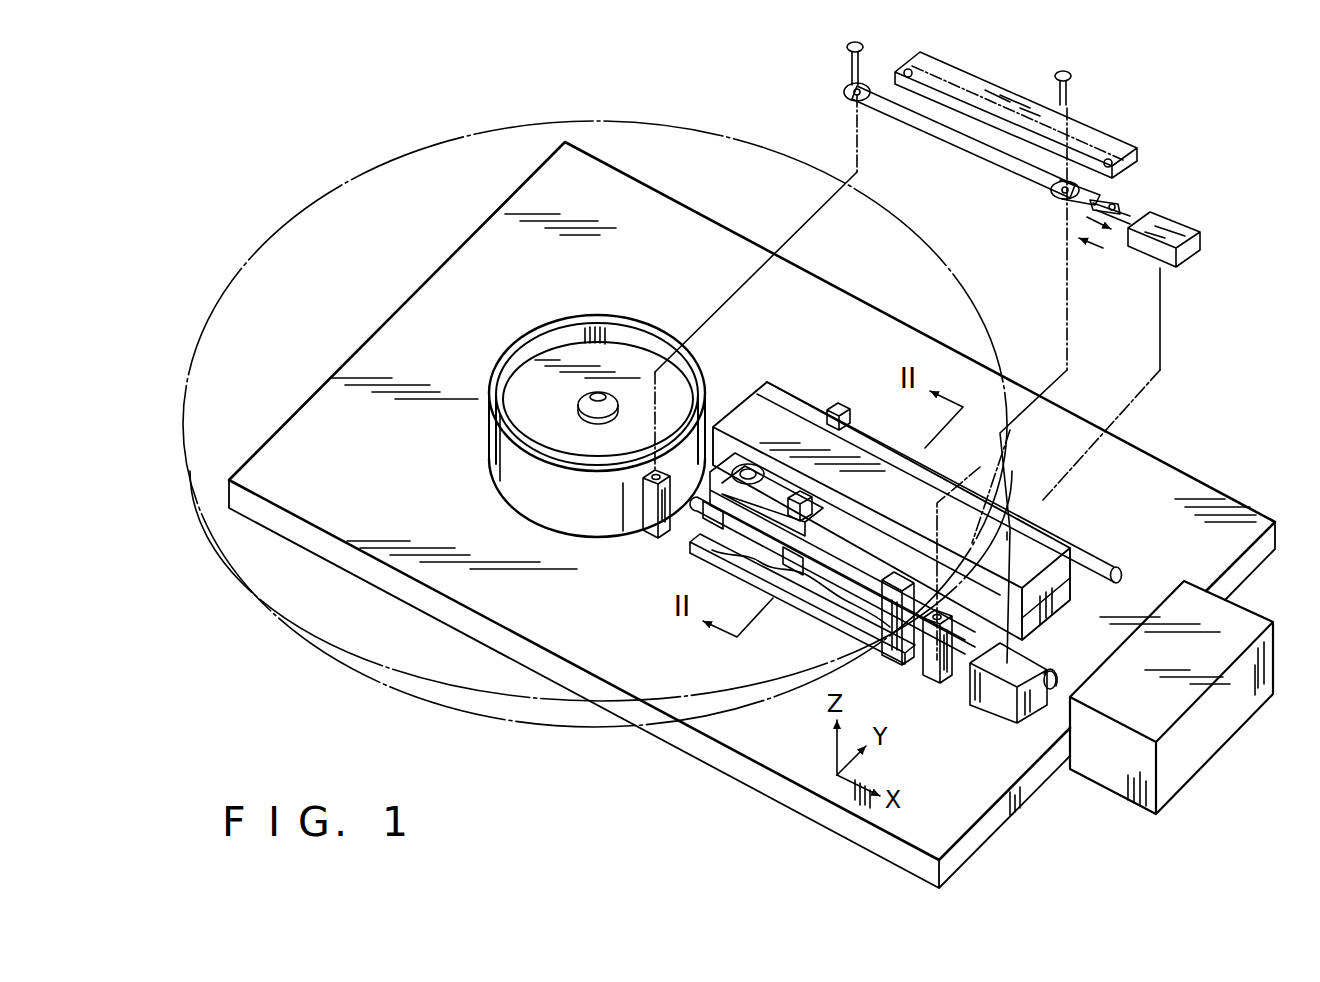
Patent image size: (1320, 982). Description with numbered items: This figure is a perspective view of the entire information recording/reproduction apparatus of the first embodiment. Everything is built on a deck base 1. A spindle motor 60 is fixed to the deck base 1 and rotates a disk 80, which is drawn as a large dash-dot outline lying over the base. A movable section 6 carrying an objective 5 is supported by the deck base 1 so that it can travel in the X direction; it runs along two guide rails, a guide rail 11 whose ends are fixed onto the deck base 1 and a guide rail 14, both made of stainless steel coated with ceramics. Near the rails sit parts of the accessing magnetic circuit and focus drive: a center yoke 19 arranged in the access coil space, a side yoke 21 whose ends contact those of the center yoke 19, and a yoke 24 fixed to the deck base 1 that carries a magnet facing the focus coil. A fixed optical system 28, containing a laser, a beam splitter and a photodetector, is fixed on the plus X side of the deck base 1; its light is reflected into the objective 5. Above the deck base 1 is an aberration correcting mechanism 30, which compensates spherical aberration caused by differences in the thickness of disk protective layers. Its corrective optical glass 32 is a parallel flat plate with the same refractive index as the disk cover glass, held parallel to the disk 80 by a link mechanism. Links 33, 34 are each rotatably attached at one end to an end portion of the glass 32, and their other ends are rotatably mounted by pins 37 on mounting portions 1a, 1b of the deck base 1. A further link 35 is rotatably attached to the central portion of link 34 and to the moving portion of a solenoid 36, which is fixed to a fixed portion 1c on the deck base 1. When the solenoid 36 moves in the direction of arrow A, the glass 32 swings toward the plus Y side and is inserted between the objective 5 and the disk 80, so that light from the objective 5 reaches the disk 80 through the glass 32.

The deck base 1 is at (1173, 460).
The mounting portion 1a is at (646, 482).
The mounting portion 1b is at (927, 660).
The fixed portion 1c is at (998, 668).
The objective 5 is at (748, 440).
The movable section 6 is at (686, 530).
The guide rail 11 is at (1058, 612).
The guide rail 14 is at (1118, 565).
The center yoke 19 is at (1060, 603).
The side yoke 21 is at (1043, 547).
The yoke 24 is at (848, 610).
The fixed optical system 28 is at (1215, 705).
The aberration correcting mechanism 30 is at (1016, 271).
The corrective optical glass 32 is at (975, 93).
The link 33 is at (880, 104).
The link 34 is at (1060, 200).
The link 35 is at (1132, 205).
The solenoid 36 is at (1190, 232).
The pin 37 is at (846, 48).
The spindle motor 60 is at (489, 438).
The disk 80 is at (896, 222).